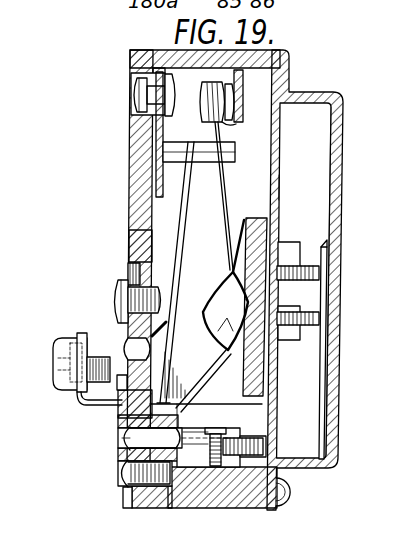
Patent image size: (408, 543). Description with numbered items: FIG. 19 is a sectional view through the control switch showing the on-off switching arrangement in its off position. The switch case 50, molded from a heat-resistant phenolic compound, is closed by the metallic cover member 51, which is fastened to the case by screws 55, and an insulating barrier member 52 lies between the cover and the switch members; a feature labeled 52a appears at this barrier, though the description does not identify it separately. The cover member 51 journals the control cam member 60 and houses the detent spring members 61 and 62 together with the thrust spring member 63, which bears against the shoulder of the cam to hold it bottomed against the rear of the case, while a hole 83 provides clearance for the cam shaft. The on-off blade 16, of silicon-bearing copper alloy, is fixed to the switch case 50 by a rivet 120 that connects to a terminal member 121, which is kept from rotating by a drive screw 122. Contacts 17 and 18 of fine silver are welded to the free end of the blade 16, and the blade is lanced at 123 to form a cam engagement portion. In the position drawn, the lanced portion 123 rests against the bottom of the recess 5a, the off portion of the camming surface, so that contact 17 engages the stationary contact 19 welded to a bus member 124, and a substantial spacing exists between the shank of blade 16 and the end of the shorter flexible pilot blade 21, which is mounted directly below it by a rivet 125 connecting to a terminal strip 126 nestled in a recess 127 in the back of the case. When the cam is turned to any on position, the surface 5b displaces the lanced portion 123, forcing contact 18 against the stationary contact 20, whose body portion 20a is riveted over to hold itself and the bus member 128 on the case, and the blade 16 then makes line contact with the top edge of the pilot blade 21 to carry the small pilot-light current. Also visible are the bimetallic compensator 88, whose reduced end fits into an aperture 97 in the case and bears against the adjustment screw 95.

The stationary contact 20 is at (167, 50).
The body portion 20a is at (143, 98).
The bus member 128 is at (130, 132).
The switch case 50 is at (137, 165).
The recess 127 is at (128, 262).
The terminal strip 126 is at (128, 273).
The rivet 125 is at (128, 352).
The terminal member 121 is at (56, 343).
The rivet 120 is at (138, 437).
The drive screw 122 is at (125, 473).
The aperture 97 is at (188, 467).
The compensator 88 is at (215, 466).
The adjustment screw 95 is at (228, 468).
The screws 55 is at (296, 492).
The thrust spring member 63 is at (331, 240).
The detent spring member 62 is at (307, 325).
The clearance hole 83 is at (322, 278).
The detent spring member 61 is at (302, 270).
The control cam member 60 is at (260, 220).
The wall portion 52a is at (290, 190).
The barrier member 52 is at (281, 131).
The cover member 51 is at (344, 110).
The bus member 124 is at (243, 88).
The stationary contact 19 is at (230, 118).
The contact 17 is at (218, 124).
The contact 18 is at (203, 102).
The on-off blade 16 is at (218, 194).
The pilot blade 21 is at (183, 194).
The surface 5b is at (242, 232).
The recess 5a is at (233, 290).
The lanced portion 123 is at (230, 315).